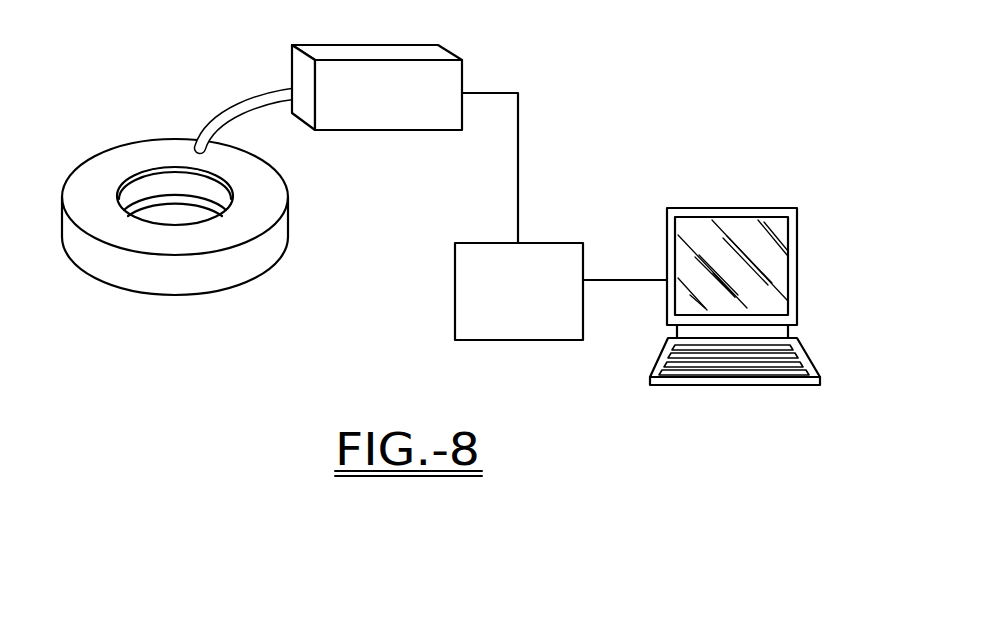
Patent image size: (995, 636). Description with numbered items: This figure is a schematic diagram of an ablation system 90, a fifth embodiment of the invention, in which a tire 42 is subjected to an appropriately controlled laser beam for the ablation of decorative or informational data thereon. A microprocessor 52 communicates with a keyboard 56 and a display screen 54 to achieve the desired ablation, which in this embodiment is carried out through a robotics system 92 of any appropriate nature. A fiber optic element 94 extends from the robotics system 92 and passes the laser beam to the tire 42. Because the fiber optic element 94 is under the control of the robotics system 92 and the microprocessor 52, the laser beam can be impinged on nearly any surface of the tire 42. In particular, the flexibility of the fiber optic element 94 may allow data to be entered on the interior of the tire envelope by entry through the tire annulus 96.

The tire 42 is at (288, 222).
The microprocessor 52 is at (525, 340).
The display screen 54 is at (799, 263).
The keyboard 56 is at (807, 354).
The ablation system 90 is at (165, 350).
The robotics system 92 is at (378, 50).
The fiber optic element 94 is at (240, 100).
The tire annulus 96 is at (160, 180).